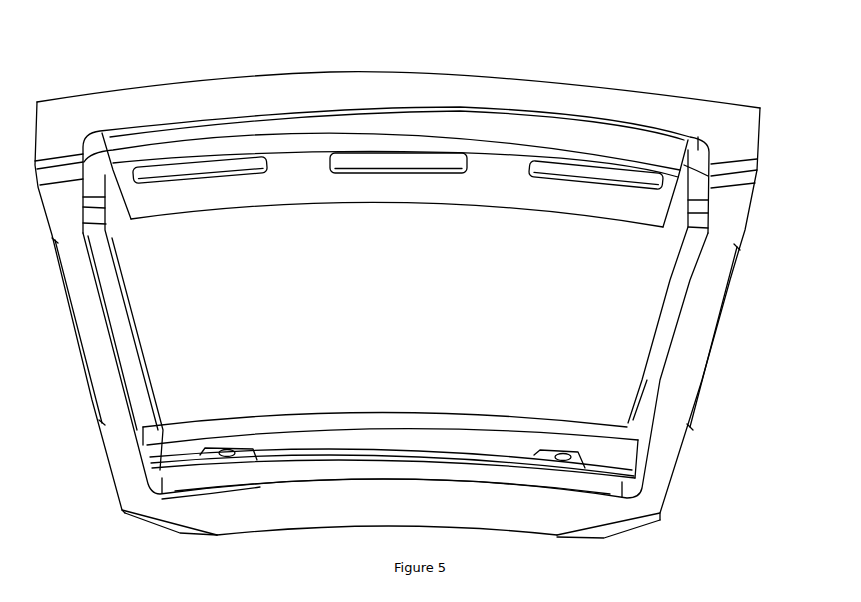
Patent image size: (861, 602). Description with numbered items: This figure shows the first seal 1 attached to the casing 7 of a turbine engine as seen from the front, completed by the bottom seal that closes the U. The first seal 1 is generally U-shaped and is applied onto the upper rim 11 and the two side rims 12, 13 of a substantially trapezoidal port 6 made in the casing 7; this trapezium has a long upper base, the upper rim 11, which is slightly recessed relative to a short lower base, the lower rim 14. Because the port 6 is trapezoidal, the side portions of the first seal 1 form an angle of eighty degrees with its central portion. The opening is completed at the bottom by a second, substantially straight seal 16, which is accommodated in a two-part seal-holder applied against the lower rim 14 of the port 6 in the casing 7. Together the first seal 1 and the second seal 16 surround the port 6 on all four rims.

The first seal 1 is at (102, 263).
The port 6 is at (562, 268).
The casing 7 is at (765, 157).
The upper rim 11 is at (560, 100).
The side rim 12 is at (670, 374).
The side rim 13 is at (112, 337).
The lower rim 14 is at (440, 467).
The second seal 16 is at (383, 437).